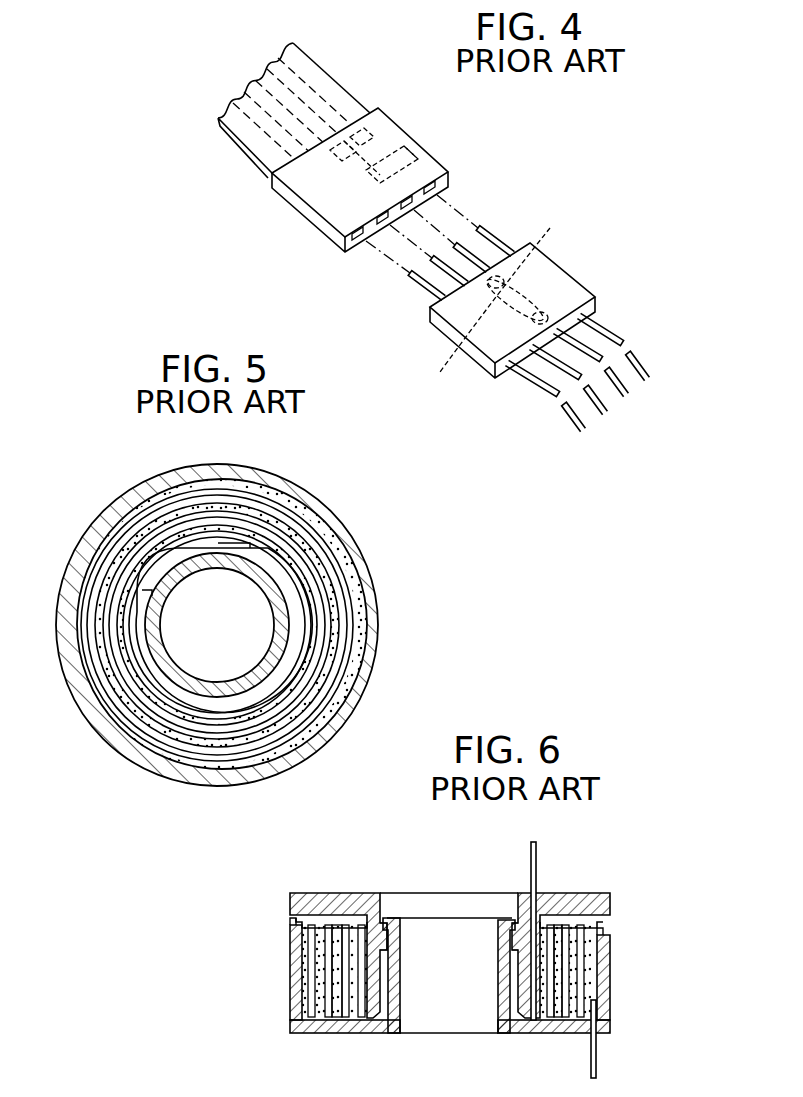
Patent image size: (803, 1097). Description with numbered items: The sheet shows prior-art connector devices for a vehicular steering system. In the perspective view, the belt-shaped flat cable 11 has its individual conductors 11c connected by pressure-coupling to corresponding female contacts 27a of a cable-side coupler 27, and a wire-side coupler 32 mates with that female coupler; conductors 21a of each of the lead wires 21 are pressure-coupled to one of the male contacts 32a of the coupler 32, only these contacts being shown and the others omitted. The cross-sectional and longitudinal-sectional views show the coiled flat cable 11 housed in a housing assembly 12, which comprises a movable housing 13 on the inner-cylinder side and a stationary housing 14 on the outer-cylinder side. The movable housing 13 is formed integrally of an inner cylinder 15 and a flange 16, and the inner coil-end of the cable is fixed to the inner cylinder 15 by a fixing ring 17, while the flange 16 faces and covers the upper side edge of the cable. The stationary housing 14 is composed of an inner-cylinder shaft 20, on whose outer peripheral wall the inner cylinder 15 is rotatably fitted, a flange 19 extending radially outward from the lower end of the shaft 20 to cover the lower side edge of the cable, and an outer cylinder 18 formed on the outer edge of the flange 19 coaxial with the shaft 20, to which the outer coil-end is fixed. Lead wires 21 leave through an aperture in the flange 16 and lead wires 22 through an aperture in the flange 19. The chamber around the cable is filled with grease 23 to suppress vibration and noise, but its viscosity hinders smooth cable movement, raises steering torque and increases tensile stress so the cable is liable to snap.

In FIG. 4, the flat cable 11 is at (244, 154).
In FIG. 5, the flat cable 11 is at (323, 547).
In FIG. 6, the flat cable 11 is at (570, 962).
In FIG. 4, the individual conductors 11c is at (333, 87).
In FIG. 4, the cable-side coupler 27 is at (395, 128).
In FIG. 4, the female contacts 27a is at (418, 158).
In FIG. 4, the wire-side coupler 32 is at (555, 268).
In FIG. 4, the male contacts 32a is at (504, 287).
In FIG. 4, the lead wires 21 is at (582, 353).
In FIG. 6, the lead wires 21 is at (530, 872).
In FIG. 4, the conductors 21a is at (478, 346).
In FIG. 5, the inner cylinder 15 is at (155, 637).
In FIG. 6, the inner cylinder 15 is at (380, 972).
In FIG. 5, the fixing ring 17 is at (305, 607).
In FIG. 5, the outer cylinder 18 is at (357, 558).
In FIG. 6, the outer cylinder 18 is at (295, 974).
In FIG. 5, the grease 23 is at (103, 640).
In FIG. 6, the grease 23 is at (577, 1000).
In FIG. 6, the housing assembly 12 is at (485, 938).
In FIG. 6, the movable housing 13 is at (600, 890).
In FIG. 6, the stationary housing 14 is at (624, 961).
In FIG. 6, the flange 16 is at (326, 898).
In FIG. 6, the flange 19 is at (348, 1030).
In FIG. 6, the inner-cylinder shaft 20 is at (402, 988).
In FIG. 6, the lead wires 22 is at (590, 1063).